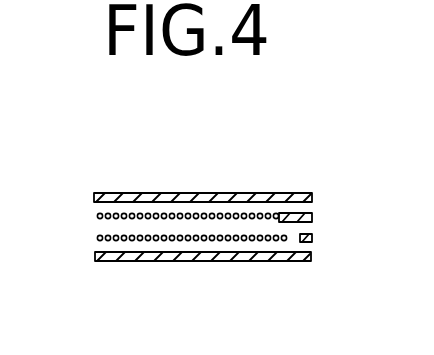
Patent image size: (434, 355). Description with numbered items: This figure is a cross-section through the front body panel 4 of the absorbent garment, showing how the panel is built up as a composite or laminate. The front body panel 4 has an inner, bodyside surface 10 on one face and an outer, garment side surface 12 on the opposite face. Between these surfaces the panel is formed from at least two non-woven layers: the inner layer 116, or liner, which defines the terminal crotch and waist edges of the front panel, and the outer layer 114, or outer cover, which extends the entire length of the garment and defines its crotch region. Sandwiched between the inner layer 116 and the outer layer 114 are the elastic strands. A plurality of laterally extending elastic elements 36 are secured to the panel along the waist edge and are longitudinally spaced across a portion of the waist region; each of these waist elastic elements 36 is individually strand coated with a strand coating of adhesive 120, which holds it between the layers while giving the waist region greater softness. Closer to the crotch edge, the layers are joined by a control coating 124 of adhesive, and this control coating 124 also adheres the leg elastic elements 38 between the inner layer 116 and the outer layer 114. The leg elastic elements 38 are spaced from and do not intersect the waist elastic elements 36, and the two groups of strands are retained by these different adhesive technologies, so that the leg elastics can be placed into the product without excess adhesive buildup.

The front body panel 4 is at (143, 170).
The inner, bodyside surface 10 is at (230, 193).
The inner layer 116 is at (175, 193).
The outer, garment side surface 12 is at (208, 261).
The outer layer 114 is at (288, 261).
The strand coating of adhesive 120 is at (120, 217).
The laterally extending elastic elements 36 is at (135, 238).
The control coating of adhesive 124 is at (307, 214).
The leg elastic elements 38 is at (313, 241).